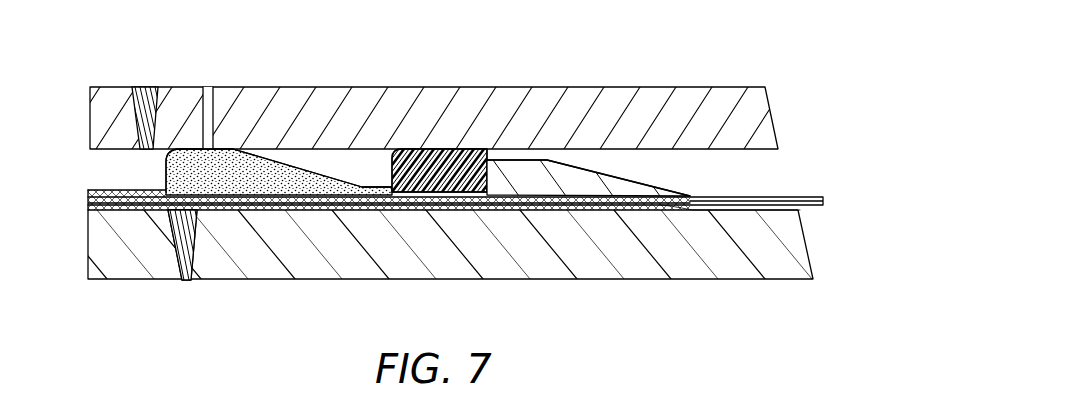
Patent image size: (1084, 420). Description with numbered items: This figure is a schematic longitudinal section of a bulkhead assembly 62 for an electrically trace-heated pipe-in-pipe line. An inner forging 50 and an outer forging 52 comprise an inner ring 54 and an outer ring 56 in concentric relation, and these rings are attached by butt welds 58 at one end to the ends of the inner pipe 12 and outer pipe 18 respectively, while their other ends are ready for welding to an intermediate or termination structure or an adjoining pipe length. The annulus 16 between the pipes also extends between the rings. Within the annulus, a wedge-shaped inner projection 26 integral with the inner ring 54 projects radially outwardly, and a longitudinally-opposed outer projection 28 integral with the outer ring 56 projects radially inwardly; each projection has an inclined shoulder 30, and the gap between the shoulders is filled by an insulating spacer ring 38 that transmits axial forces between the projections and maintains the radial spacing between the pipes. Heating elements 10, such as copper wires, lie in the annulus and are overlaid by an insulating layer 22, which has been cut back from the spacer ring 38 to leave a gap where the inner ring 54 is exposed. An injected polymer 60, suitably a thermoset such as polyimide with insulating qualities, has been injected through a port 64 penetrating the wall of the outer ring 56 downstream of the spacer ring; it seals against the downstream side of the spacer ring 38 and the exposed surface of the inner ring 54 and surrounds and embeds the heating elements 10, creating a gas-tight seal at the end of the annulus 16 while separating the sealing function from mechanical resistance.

The heating elements 10 is at (808, 197).
The inner pipe 12 is at (103, 242).
The annulus 16 is at (100, 172).
The outer pipe 18 is at (98, 122).
The insulating layer 22 is at (268, 212).
The inner projection 26 is at (517, 173).
The outer projection 28 is at (363, 183).
The inclined shoulder 30 is at (445, 185).
The insulating spacer ring 38 is at (440, 195).
The inner forging 50 is at (450, 277).
The outer forging 52 is at (431, 89).
The inner ring 54 is at (450, 269).
The outer ring 56 is at (431, 95).
The butt welds 58 is at (142, 97).
The injected polymer 60 is at (268, 175).
The bulkhead assembly 62 is at (431, 76).
The port 64 is at (205, 88).